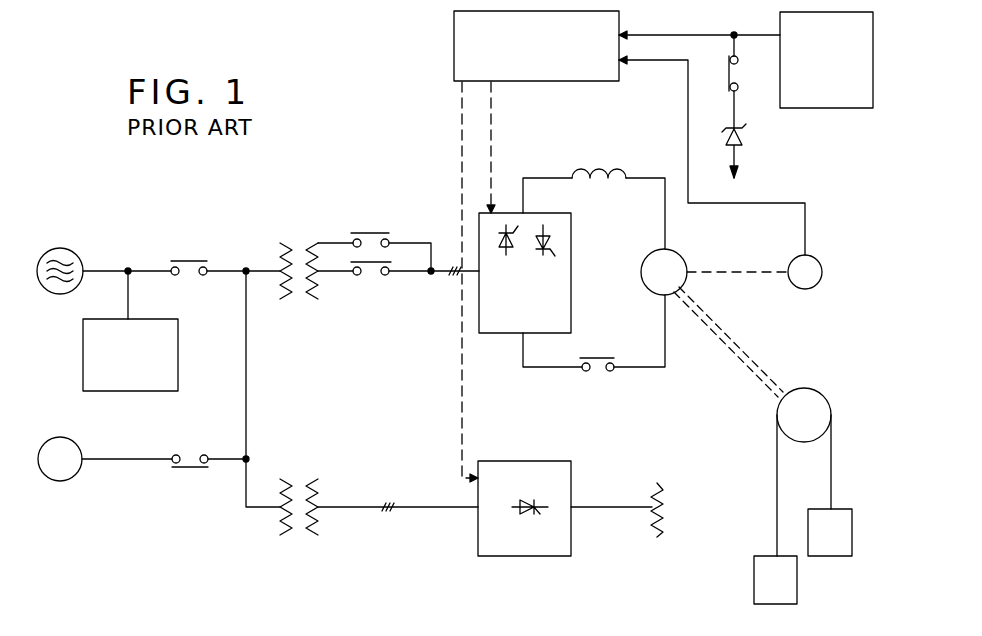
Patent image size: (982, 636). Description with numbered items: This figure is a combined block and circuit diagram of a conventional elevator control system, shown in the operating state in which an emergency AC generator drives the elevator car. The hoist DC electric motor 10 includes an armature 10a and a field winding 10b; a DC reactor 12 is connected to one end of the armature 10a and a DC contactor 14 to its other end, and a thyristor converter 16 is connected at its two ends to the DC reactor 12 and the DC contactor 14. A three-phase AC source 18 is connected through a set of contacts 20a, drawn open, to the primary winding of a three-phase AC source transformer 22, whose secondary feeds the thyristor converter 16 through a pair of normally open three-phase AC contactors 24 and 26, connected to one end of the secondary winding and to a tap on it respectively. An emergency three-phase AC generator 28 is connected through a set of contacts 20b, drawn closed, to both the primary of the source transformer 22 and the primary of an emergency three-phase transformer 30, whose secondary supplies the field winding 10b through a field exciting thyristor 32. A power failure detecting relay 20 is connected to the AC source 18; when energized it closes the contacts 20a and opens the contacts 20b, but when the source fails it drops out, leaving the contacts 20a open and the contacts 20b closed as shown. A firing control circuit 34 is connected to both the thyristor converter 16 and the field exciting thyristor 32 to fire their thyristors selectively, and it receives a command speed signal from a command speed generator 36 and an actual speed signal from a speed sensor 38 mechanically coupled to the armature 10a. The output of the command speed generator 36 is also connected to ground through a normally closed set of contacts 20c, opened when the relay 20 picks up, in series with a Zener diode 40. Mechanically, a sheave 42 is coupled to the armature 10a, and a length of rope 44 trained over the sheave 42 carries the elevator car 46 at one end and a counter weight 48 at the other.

The hoist DC electric motor 10 is at (700, 248).
The armature 10a is at (641, 266).
The field winding 10b is at (654, 481).
The DC reactor 12 is at (590, 170).
The DC contactor 14 is at (600, 373).
The thyristor converter 16 is at (492, 336).
The three-phase AC source 18 is at (63, 248).
The power failure detecting relay 20 is at (153, 392).
The set of contacts 20a is at (190, 258).
The set of contacts 20b is at (188, 470).
The set of contacts 20c is at (740, 70).
The three-phase AC source transformer 22 is at (299, 240).
The three-phase AC contactor 24 is at (372, 229).
The three-phase AC contactor 26 is at (372, 278).
The emergency three-phase AC generator 28 is at (60, 482).
The emergency three-phase transformer 30 is at (298, 477).
The field exciting thyristor 32 is at (509, 460).
The firing control circuit 34 is at (454, 52).
The command speed generator 36 is at (861, 110).
The speed sensor 38 is at (805, 290).
The Zener diode 40 is at (745, 138).
The sheave 42 is at (832, 402).
The rope 44 is at (832, 463).
The elevator car 46 is at (754, 600).
The counter weight 48 is at (848, 558).